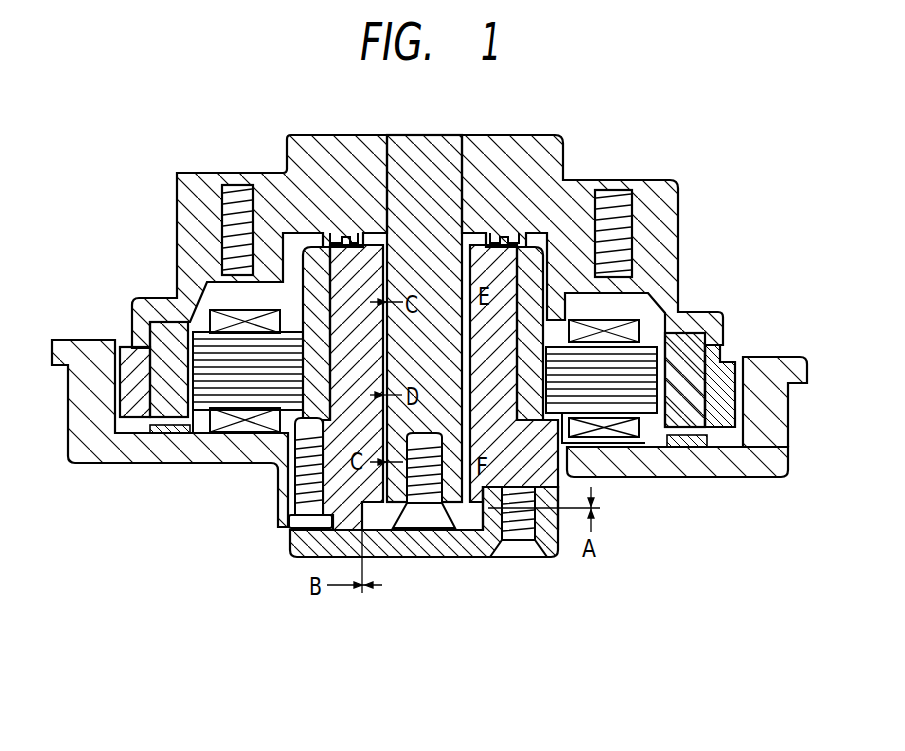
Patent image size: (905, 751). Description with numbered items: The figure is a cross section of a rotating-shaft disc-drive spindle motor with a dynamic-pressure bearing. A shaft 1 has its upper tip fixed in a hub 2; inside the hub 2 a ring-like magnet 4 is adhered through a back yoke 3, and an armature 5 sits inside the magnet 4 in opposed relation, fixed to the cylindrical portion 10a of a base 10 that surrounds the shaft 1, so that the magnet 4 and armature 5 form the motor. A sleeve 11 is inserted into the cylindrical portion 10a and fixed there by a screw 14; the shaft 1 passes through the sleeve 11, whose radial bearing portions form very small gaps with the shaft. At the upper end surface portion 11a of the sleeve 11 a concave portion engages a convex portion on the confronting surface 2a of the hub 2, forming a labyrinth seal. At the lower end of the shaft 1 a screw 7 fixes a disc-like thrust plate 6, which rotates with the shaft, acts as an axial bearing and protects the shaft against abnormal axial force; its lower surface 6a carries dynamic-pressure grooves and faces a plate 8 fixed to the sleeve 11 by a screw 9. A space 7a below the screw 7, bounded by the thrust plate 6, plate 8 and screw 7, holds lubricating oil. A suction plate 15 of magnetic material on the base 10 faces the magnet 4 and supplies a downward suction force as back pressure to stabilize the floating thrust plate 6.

The shaft 1 is at (443, 135).
The hub 2 is at (492, 135).
The confronting surface of the hub 2a is at (363, 228).
The back yoke 3 is at (740, 360).
The ring-like magnet 4 is at (712, 340).
The armature 5 is at (628, 430).
The thrust plate 6 is at (395, 563).
The lower surface of the thrust plate 6a is at (480, 567).
The screw 7 is at (437, 557).
The space 7a is at (410, 557).
The plate 8 is at (557, 553).
The screw 9 is at (540, 567).
The base 10 is at (788, 472).
The cylindrical portion of the base 10a is at (545, 322).
The sleeve 11 is at (545, 243).
The upper end surface portion of the sleeve 11a is at (334, 232).
The screw 14 is at (288, 526).
The suction plate 15 is at (697, 448).